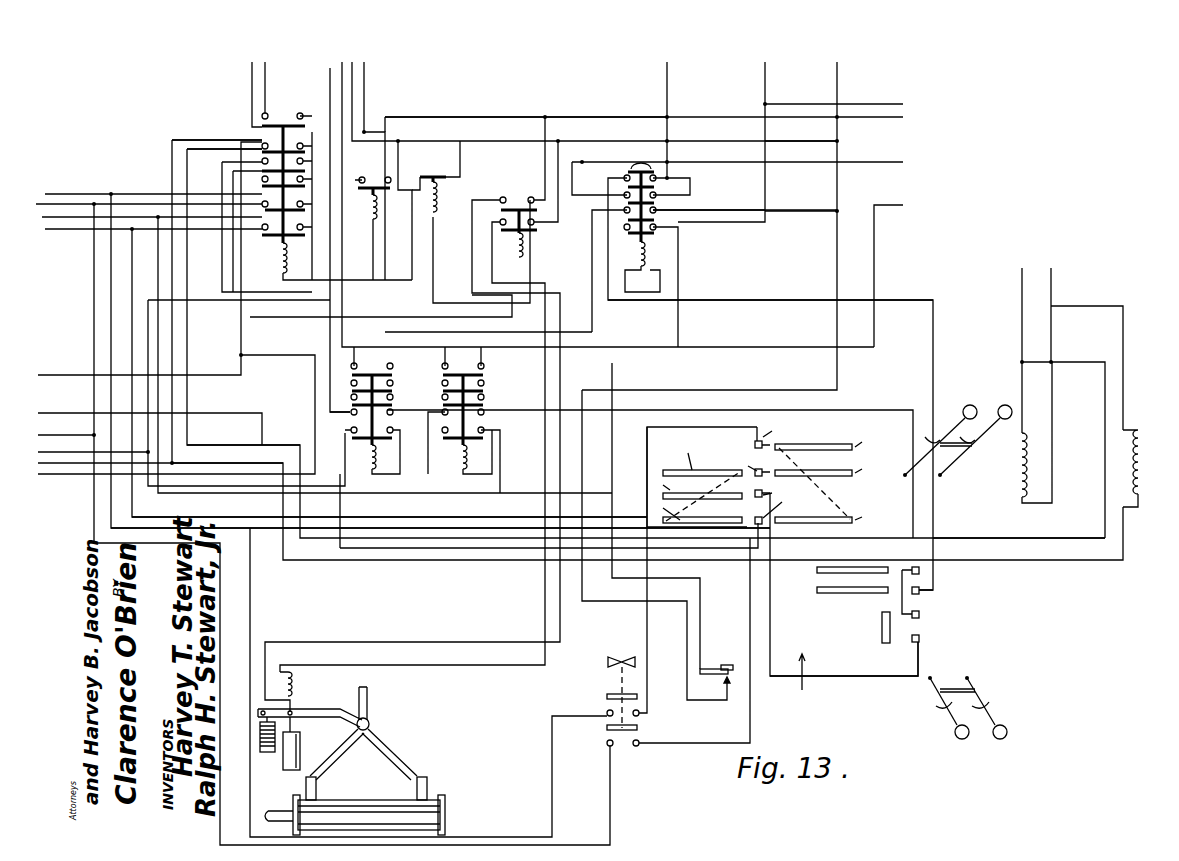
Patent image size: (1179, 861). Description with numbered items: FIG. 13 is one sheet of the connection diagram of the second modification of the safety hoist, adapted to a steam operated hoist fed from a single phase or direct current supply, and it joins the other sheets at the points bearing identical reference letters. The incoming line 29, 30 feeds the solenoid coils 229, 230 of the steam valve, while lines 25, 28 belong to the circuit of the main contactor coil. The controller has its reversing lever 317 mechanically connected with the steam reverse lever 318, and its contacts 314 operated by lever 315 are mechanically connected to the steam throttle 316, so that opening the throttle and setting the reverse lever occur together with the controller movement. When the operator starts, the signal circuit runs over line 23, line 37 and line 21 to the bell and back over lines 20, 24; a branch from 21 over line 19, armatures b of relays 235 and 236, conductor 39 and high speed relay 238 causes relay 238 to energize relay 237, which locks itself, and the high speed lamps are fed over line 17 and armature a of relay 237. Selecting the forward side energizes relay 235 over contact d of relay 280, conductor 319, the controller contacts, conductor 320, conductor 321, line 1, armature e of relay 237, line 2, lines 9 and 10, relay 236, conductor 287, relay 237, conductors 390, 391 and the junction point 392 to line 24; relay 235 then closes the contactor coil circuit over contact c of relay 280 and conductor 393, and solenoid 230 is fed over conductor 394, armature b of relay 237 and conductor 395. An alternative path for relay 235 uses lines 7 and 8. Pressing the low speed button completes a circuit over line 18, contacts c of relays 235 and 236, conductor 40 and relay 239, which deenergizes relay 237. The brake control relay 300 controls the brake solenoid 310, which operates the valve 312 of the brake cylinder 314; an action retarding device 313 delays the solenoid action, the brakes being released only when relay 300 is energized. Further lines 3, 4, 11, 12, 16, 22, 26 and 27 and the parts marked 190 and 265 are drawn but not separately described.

The line 1 is at (147, 185).
The line 2 is at (147, 199).
The supply line 3 is at (147, 213).
The supply line 4 is at (147, 227).
The line 7 is at (138, 341).
The line 8 is at (148, 422).
The line 9 is at (64, 429).
The line 10 is at (92, 444).
The conductor 11 is at (104, 458).
The conductor 12 is at (175, 421).
The conductor 16 is at (246, 94).
The line 17 is at (275, 90).
The line 18 is at (330, 236).
The line 19 is at (345, 335).
The line 20 is at (497, 150).
The line 21 is at (376, 171).
The conductor 22 is at (673, 119).
The line 23 is at (733, 141).
The line 24 is at (714, 390).
The line 25 is at (834, 94).
The conductor 26 is at (644, 124).
The conductor 27 is at (738, 152).
The line 28 is at (661, 285).
The incoming line 29 is at (1008, 348).
The incoming line 30 is at (1087, 346).
The line 37 is at (622, 122).
The conductor 39 is at (376, 302).
The conductor 40 is at (433, 280).
The controller handle position 190 is at (799, 679).
The solenoid coil 229 is at (1020, 470).
The solenoid coil 230 is at (1143, 473).
The relay 235 is at (378, 459).
The relay 236 is at (470, 456).
The relay 237 is at (317, 195).
The high speed relay 238 is at (383, 210).
The relay 239 is at (443, 186).
The controller 265 is at (834, 424).
The relay 280 is at (752, 254).
The conductor 287 is at (245, 330).
The brake control relay 300 is at (525, 240).
The brake solenoid 310 is at (296, 688).
The valve 312 is at (370, 718).
The action retarding device 313 is at (300, 748).
The brake cylinder 314 is at (928, 638).
The lever 315 is at (944, 718).
The steam throttle 316 is at (982, 698).
The reversing lever 317 is at (962, 408).
The steam reverse lever 318 is at (960, 468).
The conductor 319 is at (760, 300).
The conductor 320 is at (870, 676).
The conductor 321 is at (480, 527).
The conductor 390 is at (222, 300).
The conductor 391 is at (238, 412).
The junction point 392 is at (437, 334).
The conductor 393 is at (724, 216).
The conductor 394 is at (182, 140).
The conductor 395 is at (975, 538).